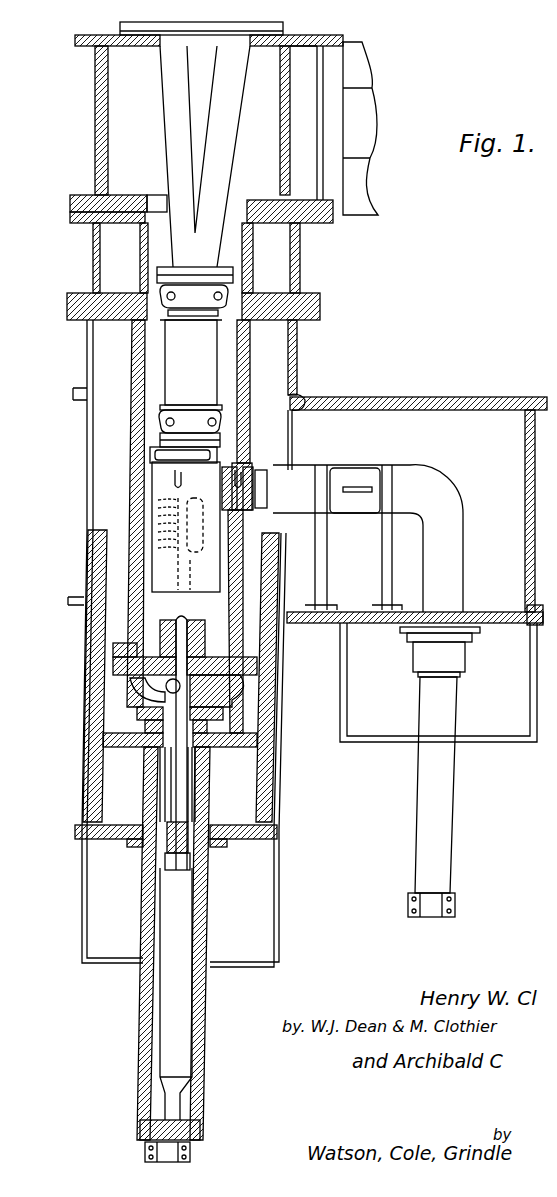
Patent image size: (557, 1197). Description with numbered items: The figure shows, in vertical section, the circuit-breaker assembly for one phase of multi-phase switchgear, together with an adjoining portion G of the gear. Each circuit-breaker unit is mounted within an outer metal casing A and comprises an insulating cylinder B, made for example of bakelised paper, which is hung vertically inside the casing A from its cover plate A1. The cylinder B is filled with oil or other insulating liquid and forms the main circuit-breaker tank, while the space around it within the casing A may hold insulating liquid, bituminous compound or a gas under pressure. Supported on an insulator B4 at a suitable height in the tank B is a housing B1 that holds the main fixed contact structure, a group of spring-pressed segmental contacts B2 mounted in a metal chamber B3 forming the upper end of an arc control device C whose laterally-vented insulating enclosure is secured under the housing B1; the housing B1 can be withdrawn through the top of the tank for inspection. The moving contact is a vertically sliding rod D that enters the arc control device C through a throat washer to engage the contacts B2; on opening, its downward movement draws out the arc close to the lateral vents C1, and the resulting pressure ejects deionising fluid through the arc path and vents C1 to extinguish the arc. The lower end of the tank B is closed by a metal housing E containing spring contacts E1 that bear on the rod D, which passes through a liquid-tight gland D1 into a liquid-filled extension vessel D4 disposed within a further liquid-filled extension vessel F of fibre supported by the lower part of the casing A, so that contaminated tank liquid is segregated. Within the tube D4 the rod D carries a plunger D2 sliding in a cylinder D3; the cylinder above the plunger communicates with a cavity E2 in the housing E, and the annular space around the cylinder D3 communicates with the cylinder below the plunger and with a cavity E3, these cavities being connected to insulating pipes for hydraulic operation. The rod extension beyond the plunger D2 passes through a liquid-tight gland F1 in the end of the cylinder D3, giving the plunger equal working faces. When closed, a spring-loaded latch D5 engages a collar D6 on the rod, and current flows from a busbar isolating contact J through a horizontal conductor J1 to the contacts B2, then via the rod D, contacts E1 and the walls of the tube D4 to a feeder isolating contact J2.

The hopper chute G is at (350, 68).
The cover plate A1 is at (318, 304).
The outer metal casing A is at (87, 418).
The insulating cylinder B is at (250, 360).
The insulator B4 is at (175, 357).
The housing B1 is at (160, 447).
The segmental contacts B2 is at (150, 474).
The metal chamber B3 is at (210, 480).
The arc control device C is at (150, 555).
The lateral vents C1 is at (135, 515).
The horizontal conductor J1 is at (250, 507).
The busbar isolating contact J is at (455, 907).
The contact rod D is at (165, 620).
The spring contacts E1 is at (160, 628).
The liquid-tight gland D1 is at (210, 652).
The metal housing E is at (113, 665).
The spring-loaded latch D5 is at (133, 688).
The cavity E2 is at (222, 680).
The cavity E3 is at (125, 706).
The extension vessel F is at (210, 903).
The extension vessel (outer tube) D4 is at (165, 765).
The cylinder D3 is at (193, 793).
The collar D6 is at (170, 822).
The plunger D2 is at (218, 855).
The liquid-tight gland F1 is at (158, 866).
The feeder isolating contact J2 is at (192, 1150).